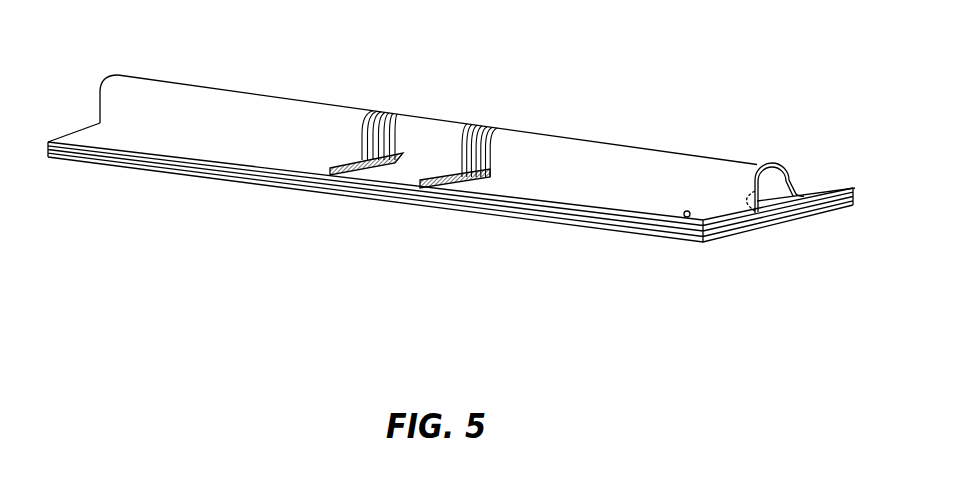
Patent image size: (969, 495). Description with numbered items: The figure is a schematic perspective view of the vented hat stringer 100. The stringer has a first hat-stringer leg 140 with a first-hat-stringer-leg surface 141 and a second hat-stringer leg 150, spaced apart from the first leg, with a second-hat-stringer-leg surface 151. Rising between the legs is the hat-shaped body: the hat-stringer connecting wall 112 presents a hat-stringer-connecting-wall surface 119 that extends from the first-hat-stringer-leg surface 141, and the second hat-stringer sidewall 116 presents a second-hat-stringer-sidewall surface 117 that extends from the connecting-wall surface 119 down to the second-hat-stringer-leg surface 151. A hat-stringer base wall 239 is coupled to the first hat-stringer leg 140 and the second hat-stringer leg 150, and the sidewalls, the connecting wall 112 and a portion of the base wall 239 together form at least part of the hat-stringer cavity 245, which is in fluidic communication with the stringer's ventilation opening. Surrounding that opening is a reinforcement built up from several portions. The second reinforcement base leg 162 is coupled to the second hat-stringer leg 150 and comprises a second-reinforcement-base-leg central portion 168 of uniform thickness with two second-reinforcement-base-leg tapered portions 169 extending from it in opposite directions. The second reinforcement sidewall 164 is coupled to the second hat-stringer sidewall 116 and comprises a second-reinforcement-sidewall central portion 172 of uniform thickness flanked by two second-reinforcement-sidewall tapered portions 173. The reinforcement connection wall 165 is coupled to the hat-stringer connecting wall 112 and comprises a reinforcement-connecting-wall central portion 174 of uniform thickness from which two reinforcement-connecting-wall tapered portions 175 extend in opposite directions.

The vented hat stringer 100 is at (685, 128).
The hat-stringer connecting wall 112 is at (156, 86).
The second hat-stringer sidewall 116 is at (107, 108).
The hat-stringer-connecting-wall surface 119 is at (232, 105).
The second-hat-stringer-sidewall surface 117 is at (763, 200).
The second hat-stringer leg 150 is at (736, 236).
The second-hat-stringer-leg surface 151 is at (681, 219).
The first hat-stringer leg 140 is at (828, 207).
The first-hat-stringer-leg surface 141 is at (843, 194).
The hat-stringer base wall 239 is at (787, 216).
The hat-stringer cavity 245 is at (773, 184).
The reinforcement-connecting-wall tapered portions 175 is at (372, 112).
The reinforcement-connecting-wall central portion 174 is at (418, 115).
The reinforcement connection wall 165 is at (451, 123).
The second-reinforcement-sidewall tapered portions 173 is at (300, 190).
The second-reinforcement-base-leg tapered portions 169 is at (363, 142).
The second reinforcement sidewall 164 is at (402, 152).
The second-reinforcement-sidewall central portion 172 is at (450, 157).
The second reinforcement base leg 162 is at (402, 181).
The second-reinforcement-base-leg central portion 168 is at (417, 173).